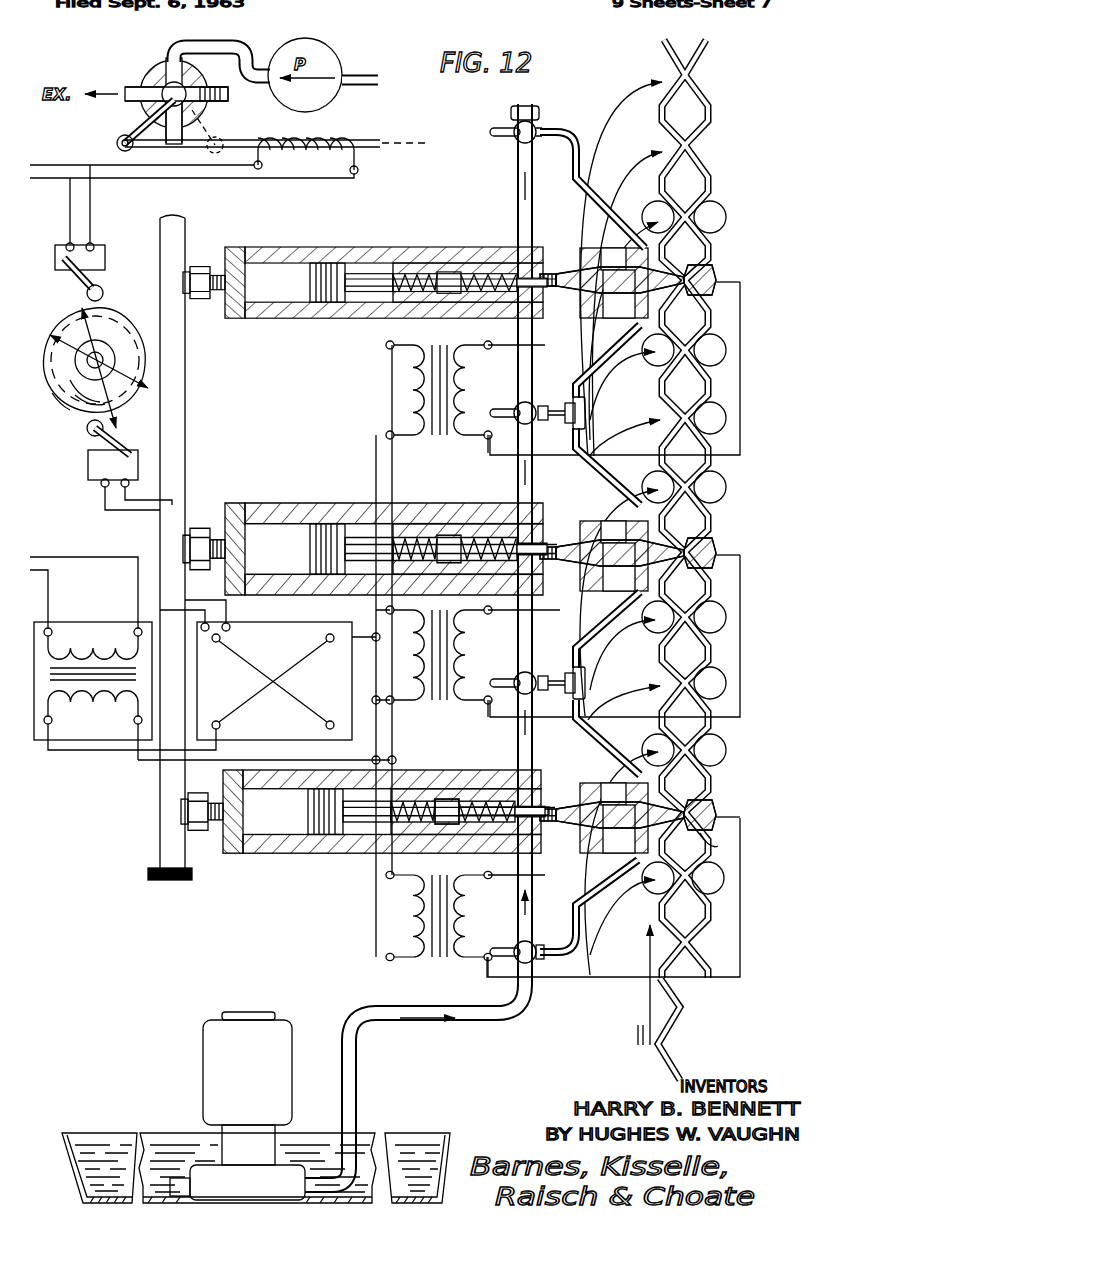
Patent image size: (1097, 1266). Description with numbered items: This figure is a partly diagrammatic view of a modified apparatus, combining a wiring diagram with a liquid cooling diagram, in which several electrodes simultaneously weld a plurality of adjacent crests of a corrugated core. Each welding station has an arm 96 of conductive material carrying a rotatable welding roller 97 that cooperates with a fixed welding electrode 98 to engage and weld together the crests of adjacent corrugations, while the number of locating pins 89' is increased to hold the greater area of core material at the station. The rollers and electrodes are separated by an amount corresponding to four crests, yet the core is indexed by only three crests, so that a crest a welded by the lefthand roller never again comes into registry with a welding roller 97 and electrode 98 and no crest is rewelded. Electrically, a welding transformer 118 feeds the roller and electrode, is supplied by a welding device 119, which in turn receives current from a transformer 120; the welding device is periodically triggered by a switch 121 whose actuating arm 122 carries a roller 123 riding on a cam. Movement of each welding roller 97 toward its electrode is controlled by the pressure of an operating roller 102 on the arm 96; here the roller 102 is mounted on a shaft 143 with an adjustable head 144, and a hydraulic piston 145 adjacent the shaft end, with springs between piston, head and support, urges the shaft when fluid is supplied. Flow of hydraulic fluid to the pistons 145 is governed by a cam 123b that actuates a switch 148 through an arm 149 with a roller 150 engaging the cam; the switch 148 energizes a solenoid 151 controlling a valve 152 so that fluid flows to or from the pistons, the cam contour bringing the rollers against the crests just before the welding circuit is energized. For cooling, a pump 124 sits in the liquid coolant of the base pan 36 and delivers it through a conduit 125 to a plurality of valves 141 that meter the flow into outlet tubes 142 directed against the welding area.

The base pan 36 is at (405, 1140).
The locating pins 89' is at (710, 565).
The arm 96 is at (600, 250).
The welding roller 97 is at (570, 270).
The welding electrode 98 is at (705, 270).
The roller 102 is at (548, 290).
The crest a is at (713, 835).
The welding transformer 118 is at (427, 337).
The welding device 119 is at (256, 670).
The transformer 120 is at (86, 628).
The switch 121 is at (90, 474).
The actuating arm 122 is at (116, 448).
The roller 123 is at (88, 435).
The cam 123b is at (52, 395).
The pump 124 is at (203, 1072).
The conduit 125 is at (349, 1062).
The valves 141 is at (518, 134).
The outlet tubes 142 is at (585, 182).
The shaft 143 is at (493, 808).
The adjustable head 144 is at (447, 800).
The piston 145 is at (305, 262).
The switch 148 is at (98, 252).
The arm 149 is at (72, 308).
The roller 150 is at (103, 293).
The solenoid 151 is at (350, 135).
The valve 152 is at (142, 82).